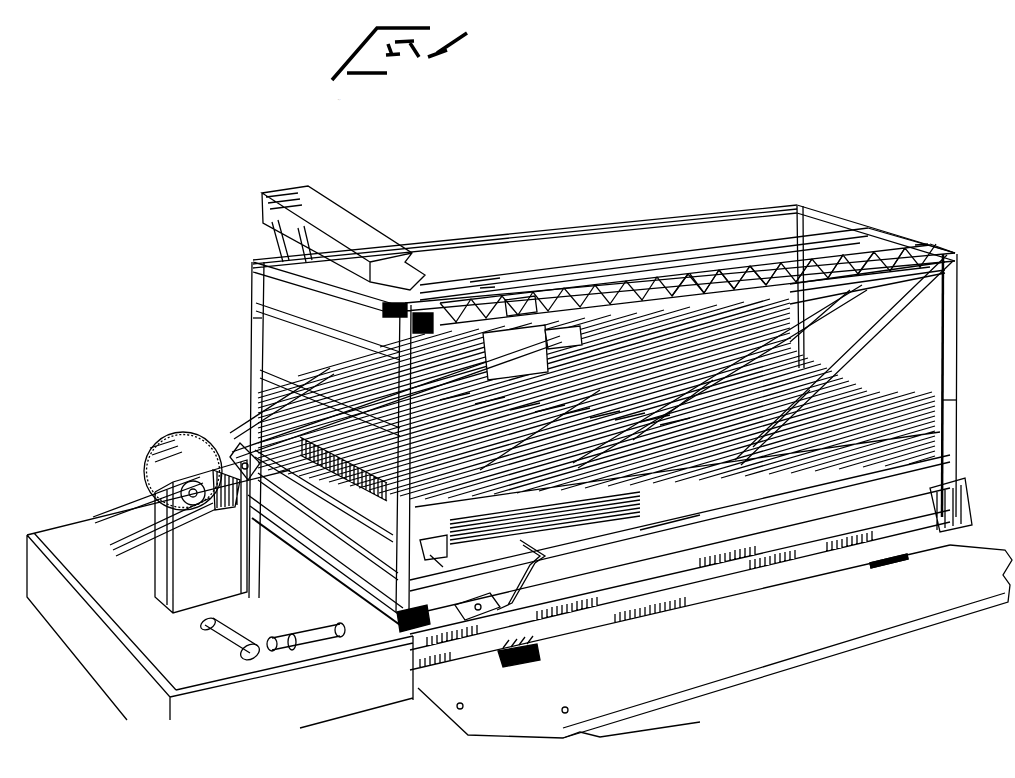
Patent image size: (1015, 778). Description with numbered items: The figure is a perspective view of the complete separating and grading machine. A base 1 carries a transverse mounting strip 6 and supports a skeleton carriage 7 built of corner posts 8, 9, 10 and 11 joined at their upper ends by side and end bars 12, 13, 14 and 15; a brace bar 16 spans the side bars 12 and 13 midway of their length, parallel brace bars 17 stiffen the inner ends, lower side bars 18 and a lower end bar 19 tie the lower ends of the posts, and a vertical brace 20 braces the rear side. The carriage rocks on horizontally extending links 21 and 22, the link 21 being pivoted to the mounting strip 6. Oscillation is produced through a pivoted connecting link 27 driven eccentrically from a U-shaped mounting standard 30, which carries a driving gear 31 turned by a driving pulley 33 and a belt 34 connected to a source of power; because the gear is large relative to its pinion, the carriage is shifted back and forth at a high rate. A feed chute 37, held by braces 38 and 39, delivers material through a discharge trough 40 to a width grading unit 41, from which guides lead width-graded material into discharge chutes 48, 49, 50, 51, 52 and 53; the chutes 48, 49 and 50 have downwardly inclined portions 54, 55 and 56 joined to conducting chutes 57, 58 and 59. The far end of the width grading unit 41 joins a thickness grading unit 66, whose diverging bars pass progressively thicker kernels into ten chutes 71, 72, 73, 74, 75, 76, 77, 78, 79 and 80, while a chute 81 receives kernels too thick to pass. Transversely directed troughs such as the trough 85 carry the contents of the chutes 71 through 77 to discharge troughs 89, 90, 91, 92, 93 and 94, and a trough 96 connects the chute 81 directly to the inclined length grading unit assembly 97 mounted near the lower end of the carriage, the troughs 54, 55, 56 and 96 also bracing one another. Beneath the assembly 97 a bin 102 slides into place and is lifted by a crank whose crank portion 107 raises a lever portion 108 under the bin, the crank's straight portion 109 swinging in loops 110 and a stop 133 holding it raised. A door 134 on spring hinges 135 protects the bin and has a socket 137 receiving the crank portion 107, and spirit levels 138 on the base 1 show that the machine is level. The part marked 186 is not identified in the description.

The base 1 is at (67, 540).
The mounting strip 6 is at (405, 637).
The carriage 7 is at (965, 352).
The corner post 8 is at (253, 318).
The corner post 9 is at (345, 375).
The corner post 10 is at (803, 223).
The corner post 11 is at (953, 313).
The side bar 12 is at (487, 263).
The side bar 13 is at (770, 235).
The end bar 14 is at (253, 290).
The end bar 15 is at (890, 240).
The brace bar 16 is at (590, 252).
The brace bars 17 is at (328, 331).
The lower side bars 18 is at (660, 535).
The lower end bar 19 is at (330, 562).
The vertical brace 20 is at (547, 213).
The link 21 is at (352, 585).
The link 22 is at (945, 488).
The pivoted connecting link 27 is at (243, 447).
The U-shaped mounting standard 30 is at (227, 547).
The driving gear 31 is at (183, 437).
The driving pulley 33 is at (226, 500).
The belt 34 is at (137, 548).
The feed chute 37 is at (317, 213).
The brace 38 is at (326, 289).
The brace 39 is at (413, 302).
The discharge trough 40 is at (407, 303).
The width grading unit 41 is at (487, 263).
The discharge chute 48 is at (523, 300).
The discharge chute 49 is at (515, 352).
The discharge chute 50 is at (551, 338).
The discharge chute 51 is at (567, 267).
The discharge chute 52 is at (667, 253).
The discharge chute 53 is at (682, 262).
The downwardly inclined portion 54 is at (745, 345).
The downwardly inclined portion 55 is at (720, 376).
The downwardly inclined portion 56 is at (675, 380).
The conducting chute 57 is at (517, 407).
The conducting chute 58 is at (600, 418).
The conducting chute 59 is at (672, 425).
The thickness grading unit 66 is at (700, 245).
The chute 71 is at (728, 258).
The chute 72 is at (712, 270).
The chute 73 is at (743, 262).
The chute 74 is at (772, 260).
The chute 75 is at (800, 265).
The chute 76 is at (833, 258).
The chute 77 is at (857, 252).
The chute 78 is at (920, 238).
The chute 79 is at (867, 284).
The chute 80 is at (911, 281).
The chute 81 is at (940, 248).
The trough 85 is at (867, 295).
The discharge trough 89 is at (440, 400).
The discharge trough 90 is at (480, 407).
The discharge trough 91 is at (540, 413).
The discharge trough 92 is at (570, 415).
The discharge trough 93 is at (625, 420).
The discharge trough 94 is at (650, 422).
The trough 96 is at (855, 362).
The length grading unit assembly 97 is at (253, 413).
The bin 102 is at (600, 555).
The crank portion 107 is at (518, 588).
The lever portion 108 is at (429, 546).
The straight portion 109 is at (478, 588).
The loops 110 is at (525, 662).
The stop 133 is at (552, 545).
The door 134 is at (870, 645).
The spring hinges 135 is at (545, 662).
The socket 137 is at (580, 707).
The spirit levels 138 is at (210, 640).
The plate 186 is at (440, 712).